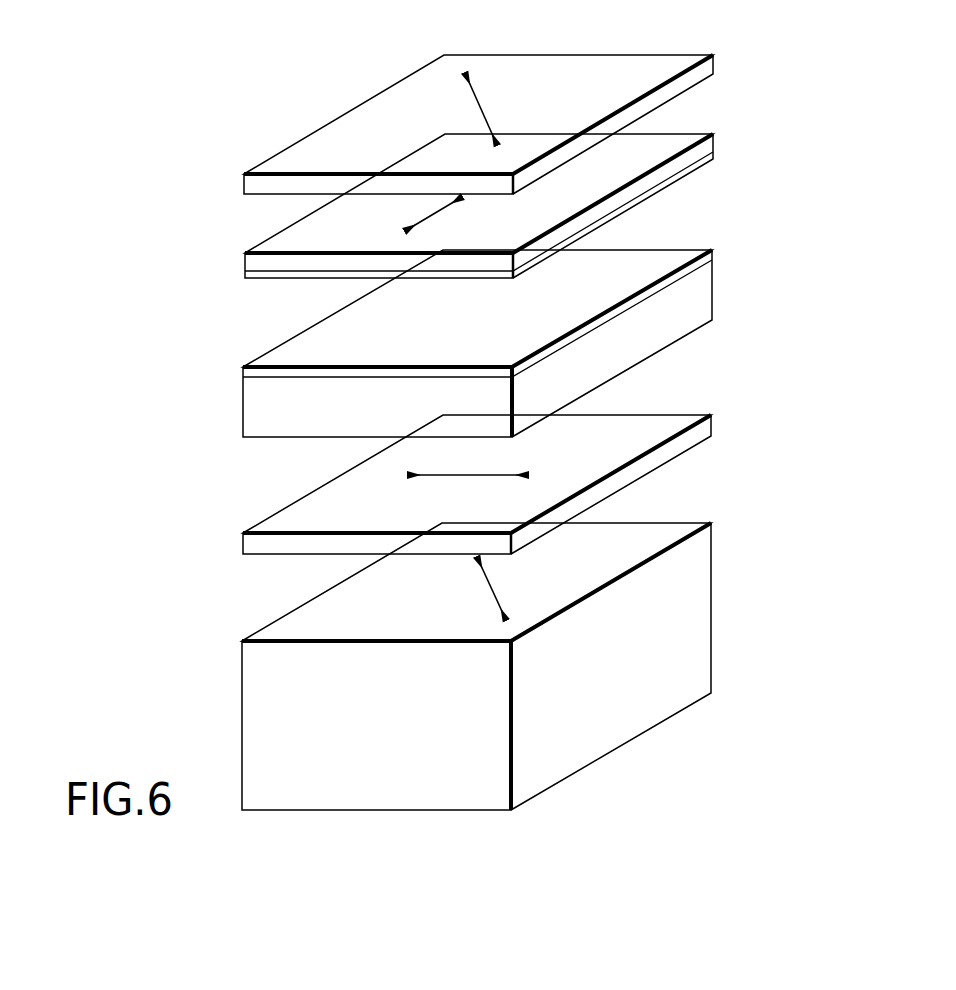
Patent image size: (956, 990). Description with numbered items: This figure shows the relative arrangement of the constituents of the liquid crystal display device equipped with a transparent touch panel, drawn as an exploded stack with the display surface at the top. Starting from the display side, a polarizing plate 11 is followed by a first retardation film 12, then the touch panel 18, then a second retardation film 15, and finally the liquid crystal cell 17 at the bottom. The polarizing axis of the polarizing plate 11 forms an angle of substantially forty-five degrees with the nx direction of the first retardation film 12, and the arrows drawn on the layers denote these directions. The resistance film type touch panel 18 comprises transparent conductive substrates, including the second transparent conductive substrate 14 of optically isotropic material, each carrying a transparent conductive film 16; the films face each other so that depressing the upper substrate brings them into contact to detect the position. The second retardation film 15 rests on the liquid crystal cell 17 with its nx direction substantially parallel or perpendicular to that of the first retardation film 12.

The polarizing plate 11 is at (707, 69).
The first retardation film 12 is at (706, 148).
The second transparent conductive substrate 14 is at (700, 298).
The second retardation film 15 is at (705, 427).
The transparent conductive film 16 is at (244, 277).
The liquid crystal cell 17 is at (700, 607).
The touch panel 18 is at (782, 125).